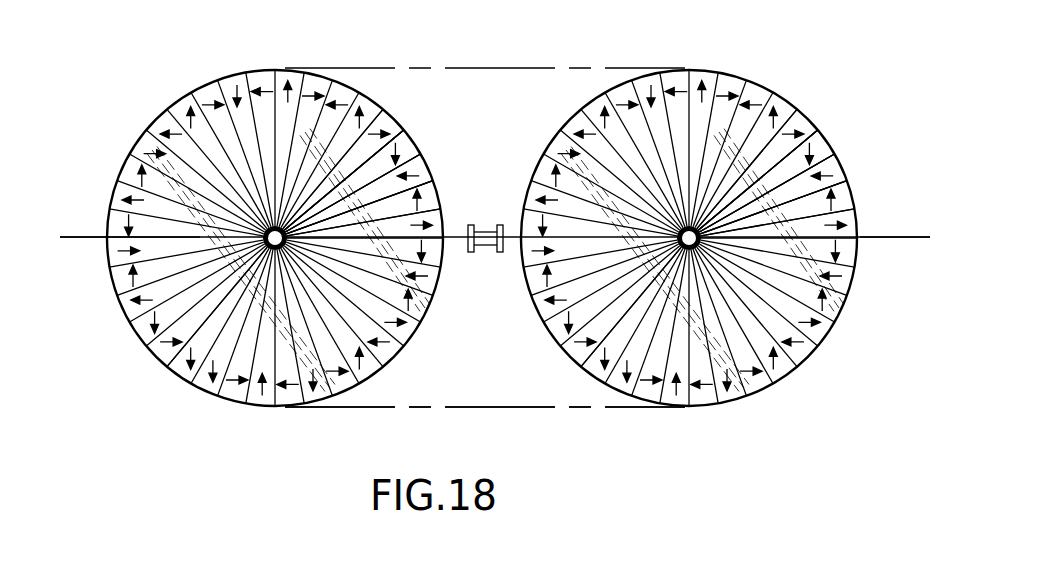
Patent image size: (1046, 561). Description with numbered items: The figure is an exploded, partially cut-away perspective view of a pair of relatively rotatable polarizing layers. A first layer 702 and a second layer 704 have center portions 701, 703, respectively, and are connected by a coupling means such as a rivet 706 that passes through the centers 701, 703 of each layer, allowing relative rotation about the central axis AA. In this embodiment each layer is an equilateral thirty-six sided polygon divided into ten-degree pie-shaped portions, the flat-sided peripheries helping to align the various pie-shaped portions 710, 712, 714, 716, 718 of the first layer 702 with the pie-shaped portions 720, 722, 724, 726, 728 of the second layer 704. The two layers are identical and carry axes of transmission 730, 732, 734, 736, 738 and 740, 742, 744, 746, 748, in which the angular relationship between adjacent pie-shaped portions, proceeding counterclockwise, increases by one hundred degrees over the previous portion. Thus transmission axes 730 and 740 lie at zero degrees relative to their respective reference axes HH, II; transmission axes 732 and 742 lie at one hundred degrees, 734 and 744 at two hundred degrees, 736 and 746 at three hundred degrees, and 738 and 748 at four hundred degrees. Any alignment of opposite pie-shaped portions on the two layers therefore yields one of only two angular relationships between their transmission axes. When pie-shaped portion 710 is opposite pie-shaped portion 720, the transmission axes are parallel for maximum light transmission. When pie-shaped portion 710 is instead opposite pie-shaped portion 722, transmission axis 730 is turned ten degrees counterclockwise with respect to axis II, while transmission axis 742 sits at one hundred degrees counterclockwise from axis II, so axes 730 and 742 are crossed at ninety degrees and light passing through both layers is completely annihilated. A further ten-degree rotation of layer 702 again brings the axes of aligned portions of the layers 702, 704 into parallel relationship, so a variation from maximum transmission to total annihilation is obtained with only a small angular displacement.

The center portion 701 is at (178, 354).
The first layer 702 is at (157, 118).
The center portion 703 is at (588, 351).
The second layer 704 is at (650, 68).
The rivet 706 is at (500, 255).
The pie-shaped portion 710 is at (440, 209).
The pie-shaped portion 712 is at (432, 178).
The pie-shaped portion 714 is at (426, 164).
The pie-shaped portion 716 is at (411, 139).
The pie-shaped portion 718 is at (396, 121).
The pie-shaped portion 720 is at (854, 209).
The pie-shaped portion 722 is at (846, 178).
The pie-shaped portion 724 is at (840, 164).
The pie-shaped portion 726 is at (825, 139).
The pie-shaped portion 728 is at (801, 113).
The axis of transmission 730 is at (443, 226).
The axis of transmission 732 is at (437, 192).
The axis of transmission 734 is at (419, 151).
The axis of transmission 736 is at (404, 130).
The axis of transmission 738 is at (387, 113).
The axis of transmission 740 is at (857, 226).
The axis of transmission 742 is at (851, 192).
The axis of transmission 744 is at (833, 151).
The axis of transmission 746 is at (818, 130).
The axis of transmission 748 is at (810, 121).
The reference axis HH is at (92, 237).
The reference axis II is at (880, 237).
The central axis AA is at (521, 246).